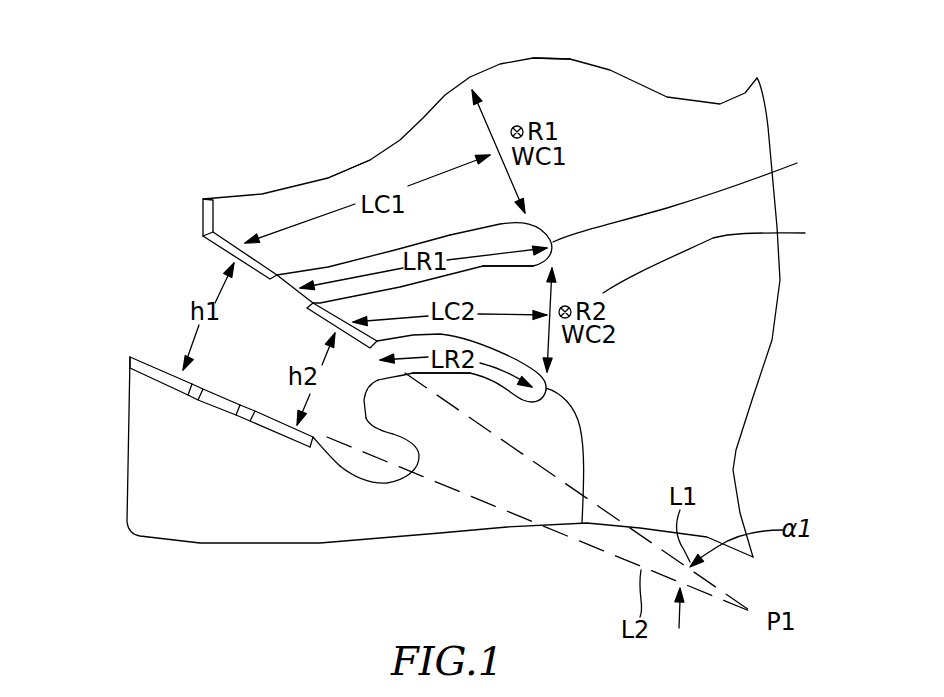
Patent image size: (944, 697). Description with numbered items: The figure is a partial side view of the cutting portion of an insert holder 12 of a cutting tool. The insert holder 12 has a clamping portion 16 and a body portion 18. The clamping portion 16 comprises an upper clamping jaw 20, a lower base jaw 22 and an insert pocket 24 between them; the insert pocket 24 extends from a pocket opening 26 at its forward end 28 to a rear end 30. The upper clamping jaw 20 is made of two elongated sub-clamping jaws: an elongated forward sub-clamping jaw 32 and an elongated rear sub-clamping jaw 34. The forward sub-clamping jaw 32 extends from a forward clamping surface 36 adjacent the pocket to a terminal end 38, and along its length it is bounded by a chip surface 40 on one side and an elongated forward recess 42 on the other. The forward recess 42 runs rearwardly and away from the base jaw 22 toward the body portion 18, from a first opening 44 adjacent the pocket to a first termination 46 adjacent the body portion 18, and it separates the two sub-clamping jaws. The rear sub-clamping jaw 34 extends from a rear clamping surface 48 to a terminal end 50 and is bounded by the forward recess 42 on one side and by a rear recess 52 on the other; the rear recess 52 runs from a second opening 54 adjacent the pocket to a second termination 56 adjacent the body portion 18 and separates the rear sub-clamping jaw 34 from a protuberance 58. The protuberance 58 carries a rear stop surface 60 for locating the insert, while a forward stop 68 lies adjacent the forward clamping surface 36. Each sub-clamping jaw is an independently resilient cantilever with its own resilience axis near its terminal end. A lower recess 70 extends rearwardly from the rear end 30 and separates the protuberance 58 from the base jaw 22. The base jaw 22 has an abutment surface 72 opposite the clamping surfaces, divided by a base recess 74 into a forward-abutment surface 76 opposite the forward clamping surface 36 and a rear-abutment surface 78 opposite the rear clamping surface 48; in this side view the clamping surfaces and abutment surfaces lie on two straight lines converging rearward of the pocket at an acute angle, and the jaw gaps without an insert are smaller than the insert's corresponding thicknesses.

The insert holder 12 is at (100, 112).
The clamping portion 16 is at (316, 100).
The body portion 18 is at (743, 310).
The upper clamping jaw 20 is at (275, 135).
The lower base jaw 22 is at (158, 449).
The insert pocket 24 is at (236, 380).
The pocket opening 26 is at (192, 252).
The forward end 28 is at (170, 286).
The rear end 30 is at (340, 468).
The elongated forward sub-clamping jaw 32 is at (367, 178).
The elongated rear sub-clamping jaw 34 is at (456, 285).
The forward clamping surface 36 is at (253, 270).
The terminal end 38 is at (528, 115).
The chip surface 40 is at (258, 197).
The elongated forward recess 42 is at (426, 230).
The first opening 44 is at (278, 285).
The first termination 46 is at (690, 189).
The rear clamping surface 48 is at (328, 326).
The terminal end 50 is at (720, 257).
The rear recess 52 is at (503, 395).
The second opening 54 is at (390, 372).
The second termination 56 is at (583, 535).
The protuberance 58 is at (425, 422).
The rear stop surface 60 is at (362, 417).
The forward stop 68 is at (203, 217).
The lower recess 70 is at (398, 458).
The abutment surface 72 is at (173, 323).
The base recess 74 is at (217, 388).
The forward-abutment surface 76 is at (152, 358).
The rear-abutment surface 78 is at (273, 415).